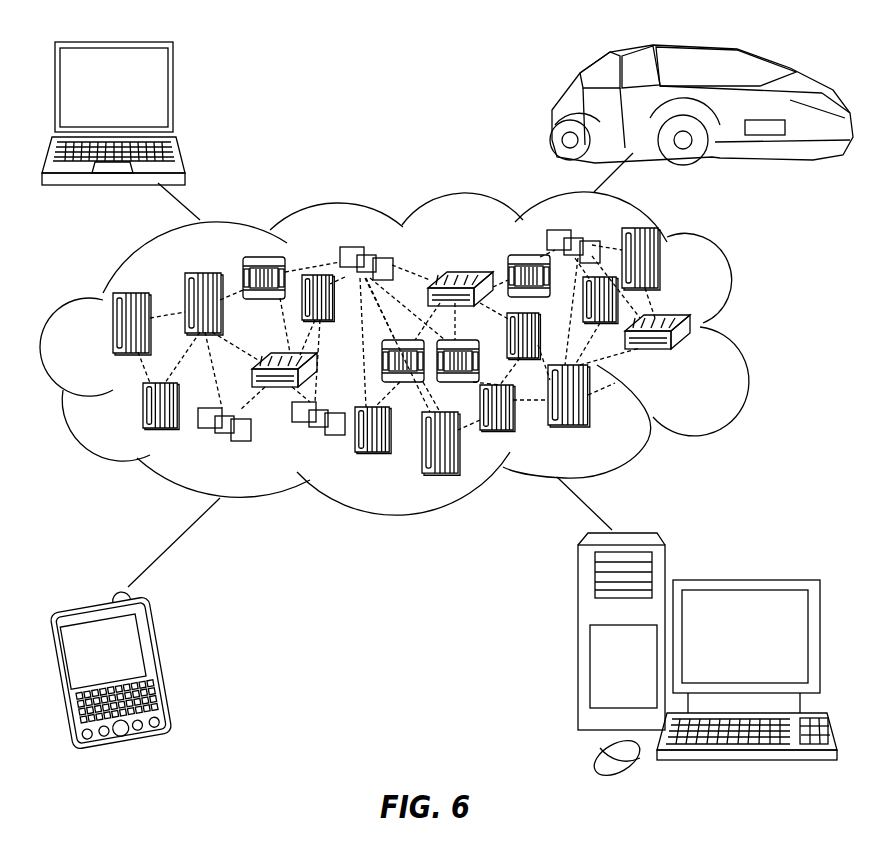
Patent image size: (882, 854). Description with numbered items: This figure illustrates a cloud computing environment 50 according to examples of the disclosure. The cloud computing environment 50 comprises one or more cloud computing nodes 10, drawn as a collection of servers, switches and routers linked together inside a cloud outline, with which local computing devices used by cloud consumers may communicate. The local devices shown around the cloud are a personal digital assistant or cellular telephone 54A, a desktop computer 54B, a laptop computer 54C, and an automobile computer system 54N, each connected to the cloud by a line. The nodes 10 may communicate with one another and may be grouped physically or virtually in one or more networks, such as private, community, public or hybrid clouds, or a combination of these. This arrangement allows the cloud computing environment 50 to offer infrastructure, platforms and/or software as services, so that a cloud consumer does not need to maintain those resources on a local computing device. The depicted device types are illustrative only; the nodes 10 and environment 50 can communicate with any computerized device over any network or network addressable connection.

The cloud computing node 10 is at (734, 376).
The cloud computing environment 50 is at (745, 332).
The personal digital assistant or cellular telephone 54A is at (163, 664).
The desktop computer 54B is at (745, 580).
The laptop computer 54C is at (173, 95).
The automobile computer system 54N is at (552, 110).